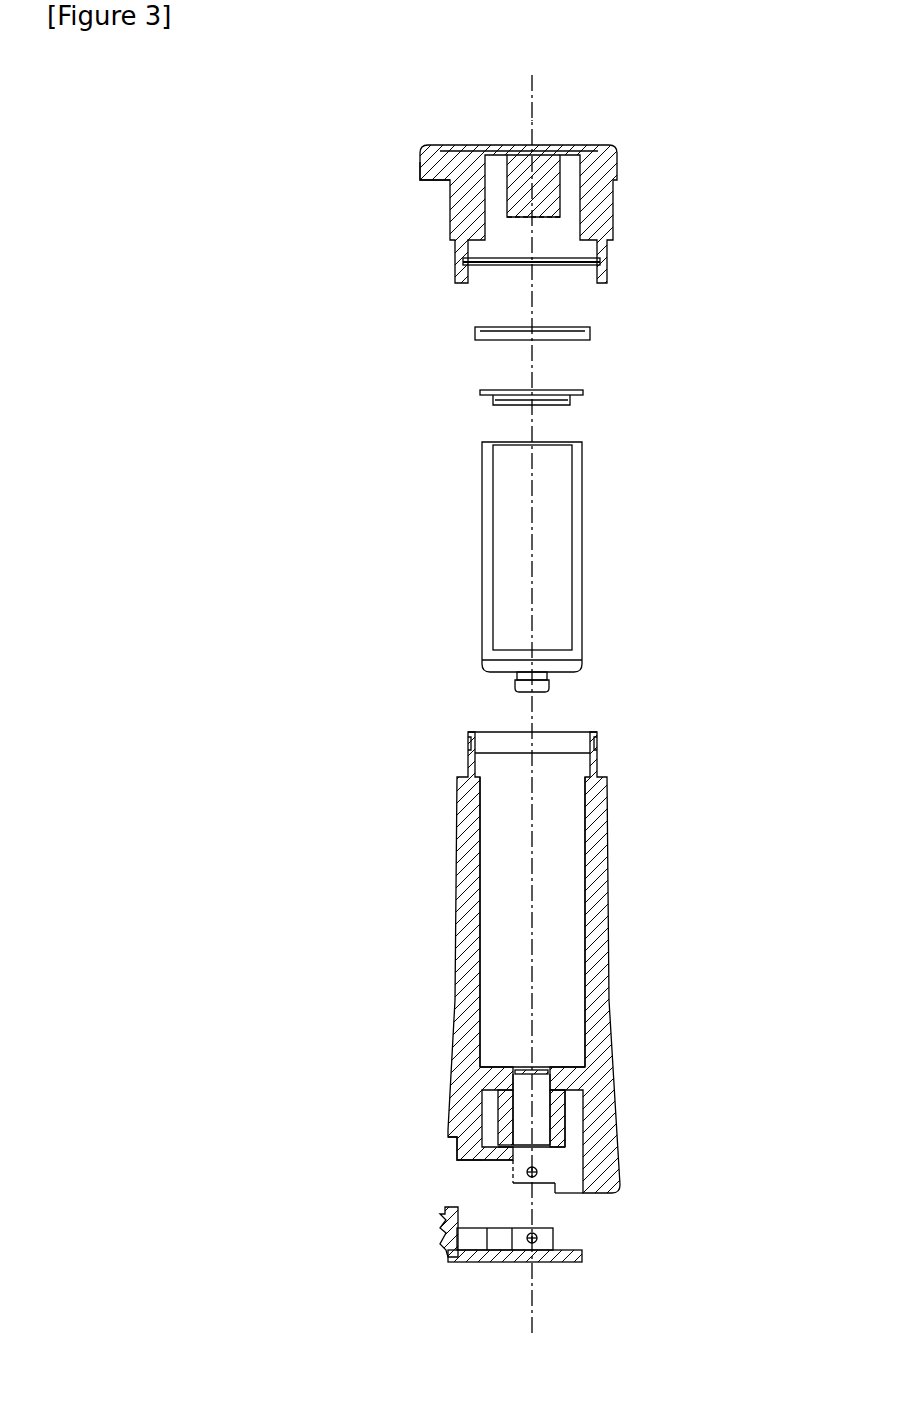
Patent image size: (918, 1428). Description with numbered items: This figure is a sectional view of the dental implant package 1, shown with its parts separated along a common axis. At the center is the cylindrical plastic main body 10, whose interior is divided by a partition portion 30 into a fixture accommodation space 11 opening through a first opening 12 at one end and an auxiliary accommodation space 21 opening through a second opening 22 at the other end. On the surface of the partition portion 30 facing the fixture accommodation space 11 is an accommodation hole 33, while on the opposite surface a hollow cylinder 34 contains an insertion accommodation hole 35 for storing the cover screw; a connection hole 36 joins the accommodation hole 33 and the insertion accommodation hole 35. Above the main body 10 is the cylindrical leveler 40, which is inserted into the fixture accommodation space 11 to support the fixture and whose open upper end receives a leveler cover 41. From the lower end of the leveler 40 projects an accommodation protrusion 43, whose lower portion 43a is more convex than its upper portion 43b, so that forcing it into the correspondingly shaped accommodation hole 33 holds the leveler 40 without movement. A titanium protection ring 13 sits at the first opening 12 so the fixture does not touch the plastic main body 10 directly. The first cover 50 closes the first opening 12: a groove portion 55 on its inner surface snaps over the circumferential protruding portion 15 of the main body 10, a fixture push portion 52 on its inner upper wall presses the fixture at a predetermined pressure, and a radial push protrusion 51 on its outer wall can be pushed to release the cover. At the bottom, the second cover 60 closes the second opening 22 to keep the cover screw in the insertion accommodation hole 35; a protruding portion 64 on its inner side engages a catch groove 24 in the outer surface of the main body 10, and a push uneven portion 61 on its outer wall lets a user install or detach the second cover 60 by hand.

The dental implant package 1 is at (135, 124).
The main body 10 is at (521, 963).
The fixture accommodation space 11 is at (554, 872).
The first opening 12 is at (570, 745).
The protection ring 13 is at (577, 330).
The protruding portion 15 is at (467, 757).
The auxiliary accommodation space 21 is at (562, 1182).
The second opening 22 is at (494, 1160).
The catch groove 24 is at (456, 1143).
The partition portion 30 is at (598, 1077).
The accommodation hole 33 is at (532, 1070).
The hollow cylinder 34 is at (560, 1113).
The insertion accommodation hole 35 is at (547, 1138).
The connection hole 36 is at (542, 1105).
The leveler 40 is at (618, 577).
The leveler cover 41 is at (577, 392).
The accommodation protrusion 43 is at (634, 684).
The lower portion 43a is at (540, 693).
The upper portion 43b is at (548, 675).
The first cover 50 is at (521, 256).
The push protrusion 51 is at (430, 172).
The fixture push portion 52 is at (556, 190).
The groove portion 55 is at (487, 262).
The second cover 60 is at (519, 1235).
The push uneven portion 61 is at (458, 1228).
The protruding portion 64 is at (462, 1217).